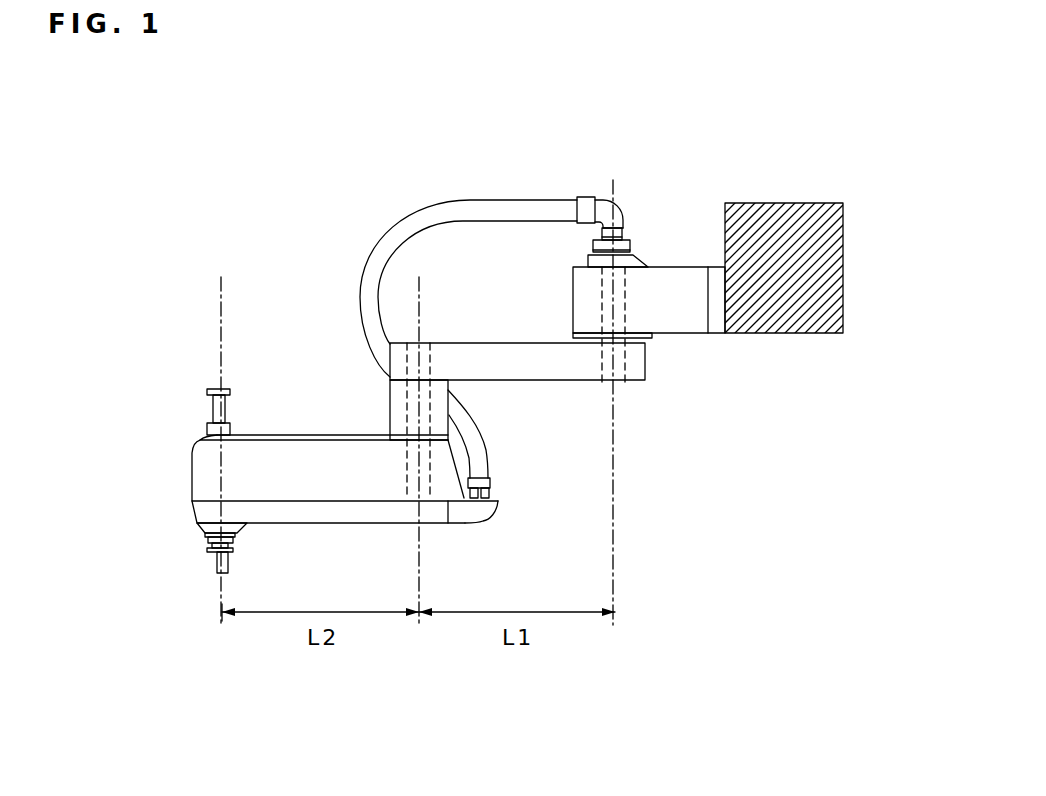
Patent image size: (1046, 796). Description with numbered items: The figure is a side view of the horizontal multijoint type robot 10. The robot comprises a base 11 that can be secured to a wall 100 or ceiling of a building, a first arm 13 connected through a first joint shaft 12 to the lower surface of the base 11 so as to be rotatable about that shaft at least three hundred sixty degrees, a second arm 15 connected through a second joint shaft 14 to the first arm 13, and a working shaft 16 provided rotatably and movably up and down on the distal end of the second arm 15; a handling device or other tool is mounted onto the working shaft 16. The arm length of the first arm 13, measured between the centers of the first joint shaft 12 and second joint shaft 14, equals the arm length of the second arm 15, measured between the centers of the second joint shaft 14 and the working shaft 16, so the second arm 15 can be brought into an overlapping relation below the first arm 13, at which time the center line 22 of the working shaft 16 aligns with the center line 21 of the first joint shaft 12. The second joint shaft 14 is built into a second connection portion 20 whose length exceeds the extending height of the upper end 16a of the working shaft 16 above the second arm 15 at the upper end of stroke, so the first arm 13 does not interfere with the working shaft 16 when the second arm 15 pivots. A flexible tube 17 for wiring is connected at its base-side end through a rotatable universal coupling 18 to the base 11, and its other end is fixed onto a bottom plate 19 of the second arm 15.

The horizontal multijoint type robot 10 is at (342, 247).
The base 11 is at (679, 283).
The first joint shaft 12 is at (625, 303).
The first arm 13 is at (457, 343).
The second joint shaft 14 is at (405, 403).
The second arm 15 is at (335, 460).
The working shaft 16 is at (213, 562).
The upper end of the working shaft 16a is at (216, 389).
The flexible tube for wiring 17 is at (409, 208).
The rotatable universal coupling 18 is at (593, 238).
The bottom plate 19 is at (465, 517).
The second connection portion 20 is at (443, 412).
The center line of the first joint shaft 21 is at (622, 484).
The center line of the working shaft 22 is at (222, 593).
The wall 100 is at (800, 333).